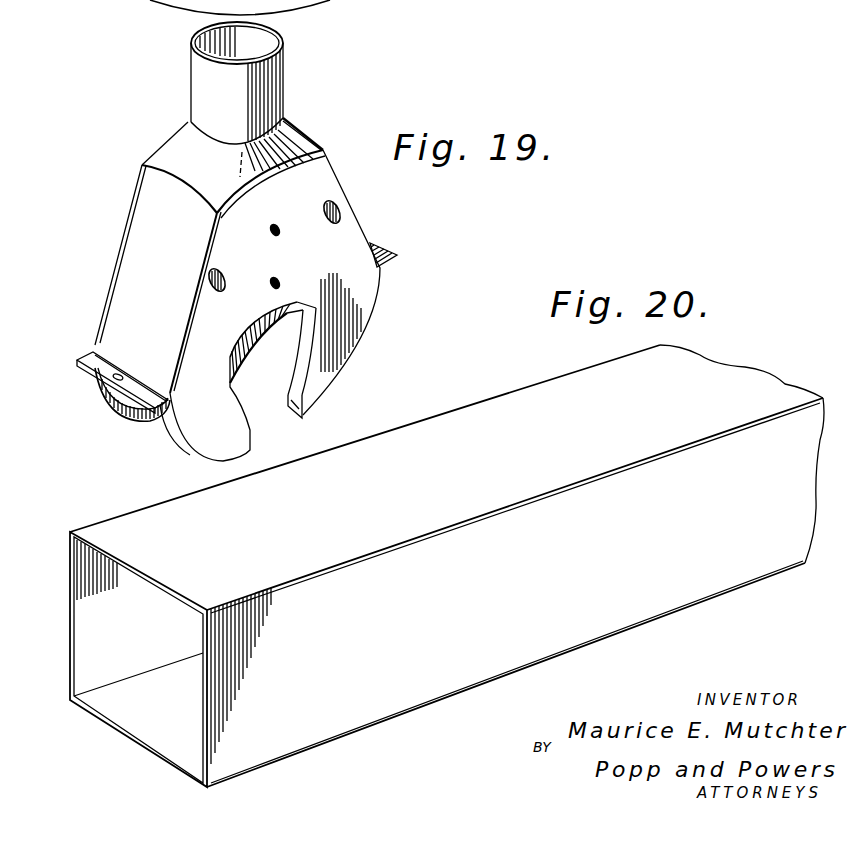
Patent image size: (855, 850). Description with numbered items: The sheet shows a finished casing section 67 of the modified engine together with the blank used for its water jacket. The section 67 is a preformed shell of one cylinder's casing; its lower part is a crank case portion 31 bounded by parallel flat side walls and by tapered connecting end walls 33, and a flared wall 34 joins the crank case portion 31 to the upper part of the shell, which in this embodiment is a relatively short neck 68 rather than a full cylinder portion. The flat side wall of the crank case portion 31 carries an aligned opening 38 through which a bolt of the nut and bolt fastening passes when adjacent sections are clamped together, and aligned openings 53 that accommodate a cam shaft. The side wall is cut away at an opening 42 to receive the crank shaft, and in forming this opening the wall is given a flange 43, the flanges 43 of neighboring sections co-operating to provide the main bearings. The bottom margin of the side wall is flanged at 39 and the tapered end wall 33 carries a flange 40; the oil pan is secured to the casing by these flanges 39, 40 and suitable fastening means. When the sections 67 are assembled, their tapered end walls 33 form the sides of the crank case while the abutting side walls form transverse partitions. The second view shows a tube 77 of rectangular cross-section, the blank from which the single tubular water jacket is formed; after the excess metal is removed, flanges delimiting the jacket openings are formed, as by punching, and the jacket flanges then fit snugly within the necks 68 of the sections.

In FIG. 19, the neck 68 is at (198, 93).
In FIG. 19, the section 67 is at (296, 113).
In FIG. 19, the flared wall 34 is at (167, 152).
In FIG. 19, the tapered connecting end wall 33 is at (133, 240).
In FIG. 19, the crank case portion 31 is at (362, 217).
In FIG. 19, the aligned opening 38 is at (278, 226).
In FIG. 19, the aligned opening 53 is at (227, 277).
In FIG. 19, the flange 40 is at (80, 358).
In FIG. 19, the flange 39 is at (166, 427).
In FIG. 19, the flange 43 is at (298, 367).
In FIG. 19, the cut-away opening 42 is at (262, 408).
In FIG. 20, the tube 77 is at (479, 408).